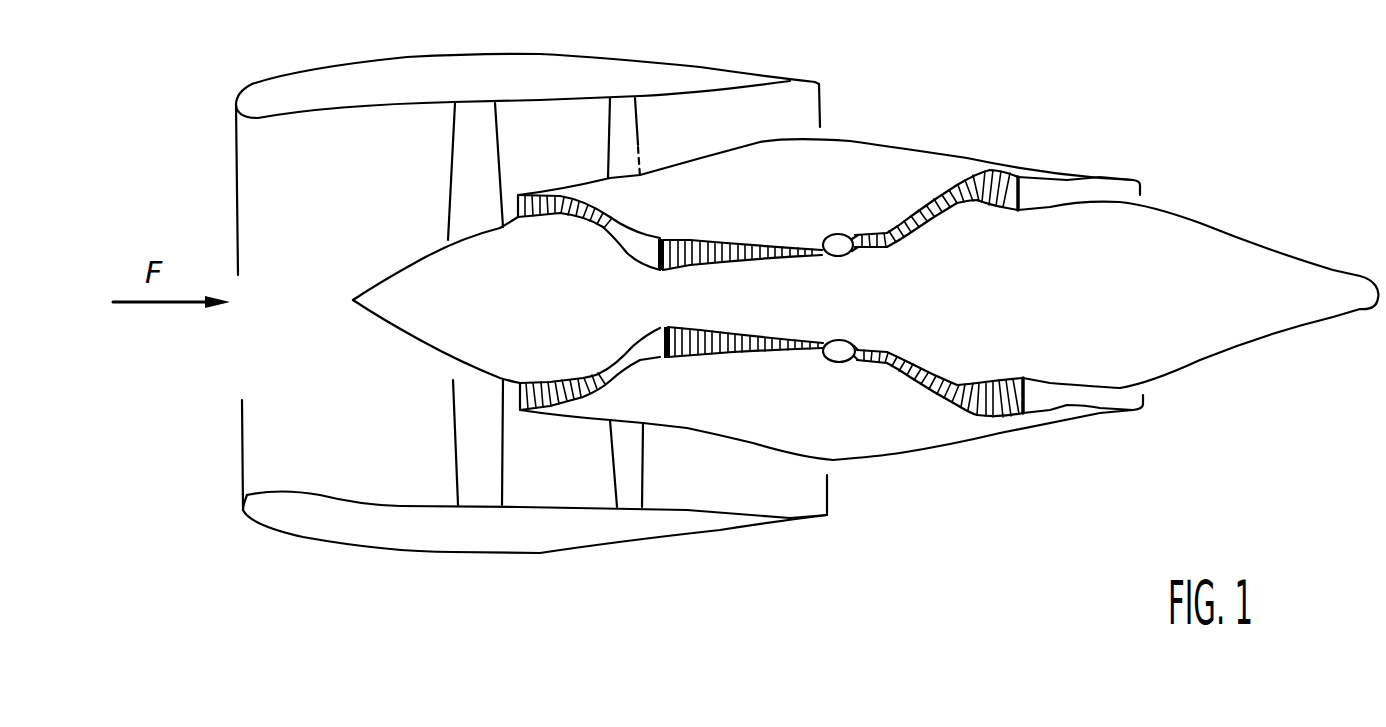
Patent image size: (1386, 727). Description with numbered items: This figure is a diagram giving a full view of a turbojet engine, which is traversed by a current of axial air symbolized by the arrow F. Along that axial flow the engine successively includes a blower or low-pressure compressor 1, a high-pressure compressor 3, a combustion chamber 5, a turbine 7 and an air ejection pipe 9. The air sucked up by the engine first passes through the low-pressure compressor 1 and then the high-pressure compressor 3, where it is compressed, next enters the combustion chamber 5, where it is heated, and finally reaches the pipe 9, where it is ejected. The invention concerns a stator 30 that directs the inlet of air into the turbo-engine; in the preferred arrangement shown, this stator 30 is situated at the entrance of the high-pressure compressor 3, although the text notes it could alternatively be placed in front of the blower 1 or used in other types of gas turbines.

The low-pressure compressor 1 is at (508, 204).
The high-pressure compressor 3 is at (694, 238).
The combustion chamber 5 is at (843, 238).
The turbine 7 is at (1030, 193).
The air ejection pipe 9 is at (1088, 194).
The stator 30 is at (660, 347).